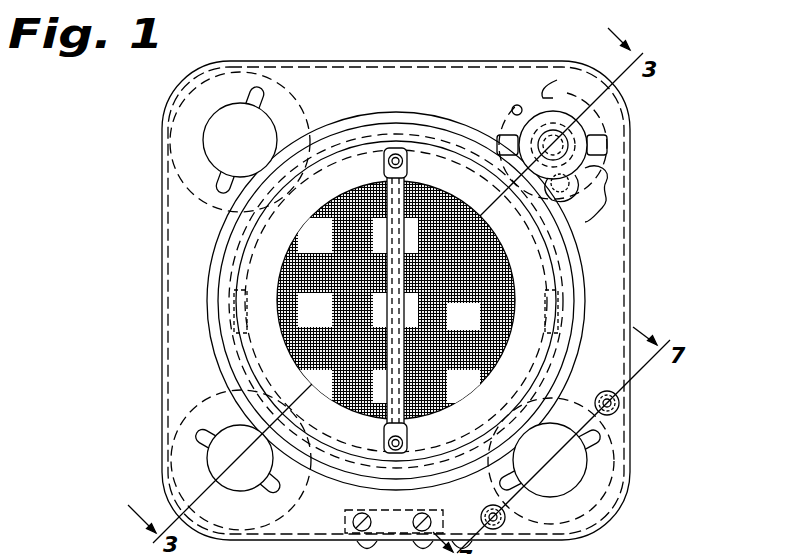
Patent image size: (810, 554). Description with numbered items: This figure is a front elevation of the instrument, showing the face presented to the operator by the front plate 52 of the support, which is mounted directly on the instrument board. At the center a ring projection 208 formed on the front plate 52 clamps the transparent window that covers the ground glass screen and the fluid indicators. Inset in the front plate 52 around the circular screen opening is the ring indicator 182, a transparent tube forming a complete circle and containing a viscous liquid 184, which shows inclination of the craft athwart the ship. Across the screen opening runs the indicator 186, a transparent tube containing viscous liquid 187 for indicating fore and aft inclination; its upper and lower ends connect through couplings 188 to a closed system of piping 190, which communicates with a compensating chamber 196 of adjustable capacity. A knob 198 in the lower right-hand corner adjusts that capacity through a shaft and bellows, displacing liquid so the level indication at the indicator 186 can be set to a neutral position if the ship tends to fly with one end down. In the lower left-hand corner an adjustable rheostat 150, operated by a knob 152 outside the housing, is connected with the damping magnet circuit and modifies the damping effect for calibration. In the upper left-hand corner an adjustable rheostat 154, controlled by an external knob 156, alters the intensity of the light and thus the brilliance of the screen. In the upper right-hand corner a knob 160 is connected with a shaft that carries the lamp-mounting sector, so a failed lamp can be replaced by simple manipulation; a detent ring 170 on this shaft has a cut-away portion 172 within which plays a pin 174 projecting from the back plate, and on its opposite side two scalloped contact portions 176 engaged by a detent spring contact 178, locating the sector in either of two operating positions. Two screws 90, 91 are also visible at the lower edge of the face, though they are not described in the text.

The front plate 52 is at (182, 227).
The screw 90 is at (330, 533).
The screw 91 is at (530, 533).
The adjustable rheostat 150 is at (180, 423).
The knob 152 is at (238, 460).
The adjustable rheostat 154 is at (173, 148).
The knob 156 is at (240, 142).
The knob 160 is at (580, 138).
The detent ring 170 is at (603, 160).
The cut-away portion 172 is at (545, 97).
The pin 174 is at (514, 105).
The scalloped contact portions 176 is at (550, 185).
The detent spring contact 178 is at (540, 205).
The ring indicator 182 is at (362, 135).
The viscous liquid 184 is at (553, 325).
The indicator 186 is at (505, 270).
The viscous liquid 187 is at (398, 351).
The couplings 188 is at (554, 547).
The closed system of piping 190 is at (482, 532).
The compensating chamber 196 is at (610, 495).
The knob 198 is at (577, 463).
The ring projection 208 is at (208, 295).